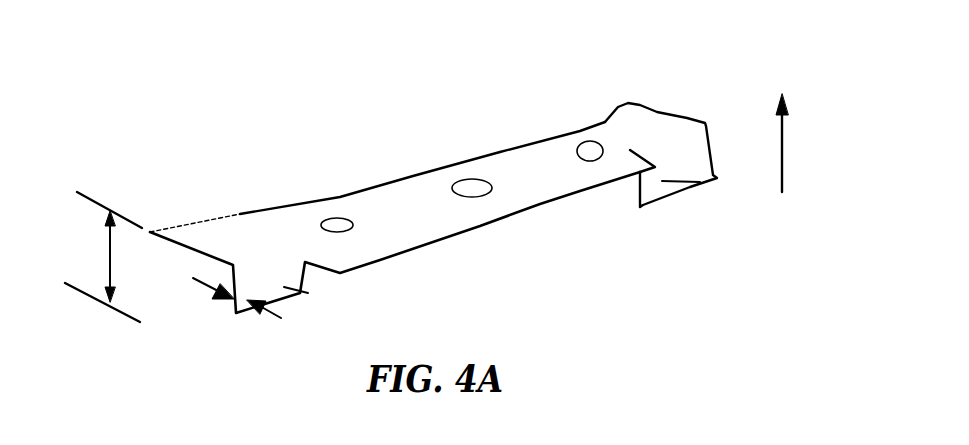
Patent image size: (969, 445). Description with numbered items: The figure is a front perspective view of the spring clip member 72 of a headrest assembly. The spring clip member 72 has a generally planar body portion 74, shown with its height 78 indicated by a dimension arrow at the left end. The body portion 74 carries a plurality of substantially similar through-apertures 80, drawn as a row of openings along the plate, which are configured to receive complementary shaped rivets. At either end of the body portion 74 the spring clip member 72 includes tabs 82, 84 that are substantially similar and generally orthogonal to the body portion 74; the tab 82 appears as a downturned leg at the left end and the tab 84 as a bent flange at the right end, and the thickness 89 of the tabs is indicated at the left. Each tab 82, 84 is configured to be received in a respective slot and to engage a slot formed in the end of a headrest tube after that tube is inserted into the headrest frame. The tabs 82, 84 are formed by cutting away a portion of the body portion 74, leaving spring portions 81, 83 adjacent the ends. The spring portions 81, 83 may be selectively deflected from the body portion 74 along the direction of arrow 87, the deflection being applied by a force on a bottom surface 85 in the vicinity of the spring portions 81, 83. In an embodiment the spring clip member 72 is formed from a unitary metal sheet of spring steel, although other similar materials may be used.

The spring clip member 72 is at (552, 140).
The body portion 74 is at (412, 188).
The height 78 is at (110, 262).
The through-apertures 80 is at (333, 222).
The spring portion 81 is at (228, 228).
The tab 82 is at (308, 287).
The spring portion 83 is at (648, 135).
The tab 84 is at (700, 183).
The bottom surface 85 is at (457, 241).
The arrow 87 is at (782, 152).
The thickness 89 is at (223, 292).